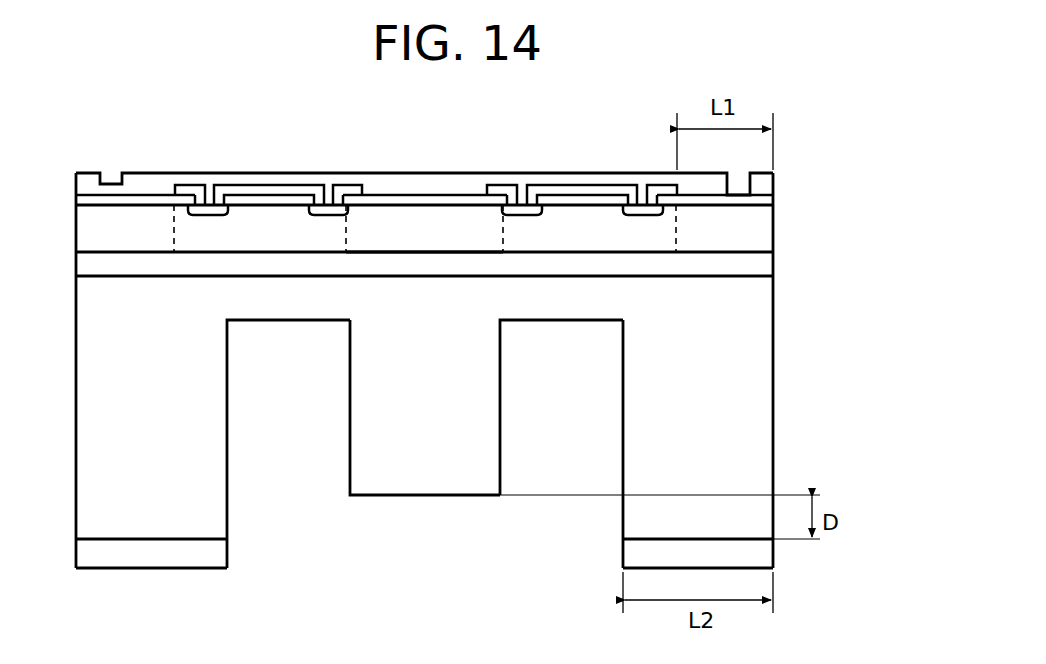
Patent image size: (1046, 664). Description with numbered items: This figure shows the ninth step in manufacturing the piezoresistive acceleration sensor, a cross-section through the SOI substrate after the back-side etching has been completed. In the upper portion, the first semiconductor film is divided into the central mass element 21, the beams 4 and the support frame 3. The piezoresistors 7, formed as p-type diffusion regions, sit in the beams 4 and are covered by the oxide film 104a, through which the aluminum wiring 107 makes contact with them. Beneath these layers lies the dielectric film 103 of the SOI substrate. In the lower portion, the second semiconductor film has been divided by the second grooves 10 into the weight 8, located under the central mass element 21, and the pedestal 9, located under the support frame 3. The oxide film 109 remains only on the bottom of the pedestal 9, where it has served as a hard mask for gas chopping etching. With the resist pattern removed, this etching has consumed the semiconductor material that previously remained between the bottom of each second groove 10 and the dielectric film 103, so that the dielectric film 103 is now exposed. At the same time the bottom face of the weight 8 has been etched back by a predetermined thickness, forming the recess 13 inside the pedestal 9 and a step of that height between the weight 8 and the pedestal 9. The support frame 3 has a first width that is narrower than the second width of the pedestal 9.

The support frame 3 is at (78, 231).
The beams 4 is at (250, 220).
The piezoresistor 7 is at (213, 216).
The weight 8 is at (522, 411).
The pedestal 9 is at (87, 420).
The second grooves 10 is at (290, 465).
The recess 13 is at (387, 545).
The central mass element 21 is at (420, 220).
The dielectric film 103 is at (758, 264).
The oxide film 104a is at (762, 200).
The wiring 107 is at (262, 190).
The oxide film 109 is at (167, 550).